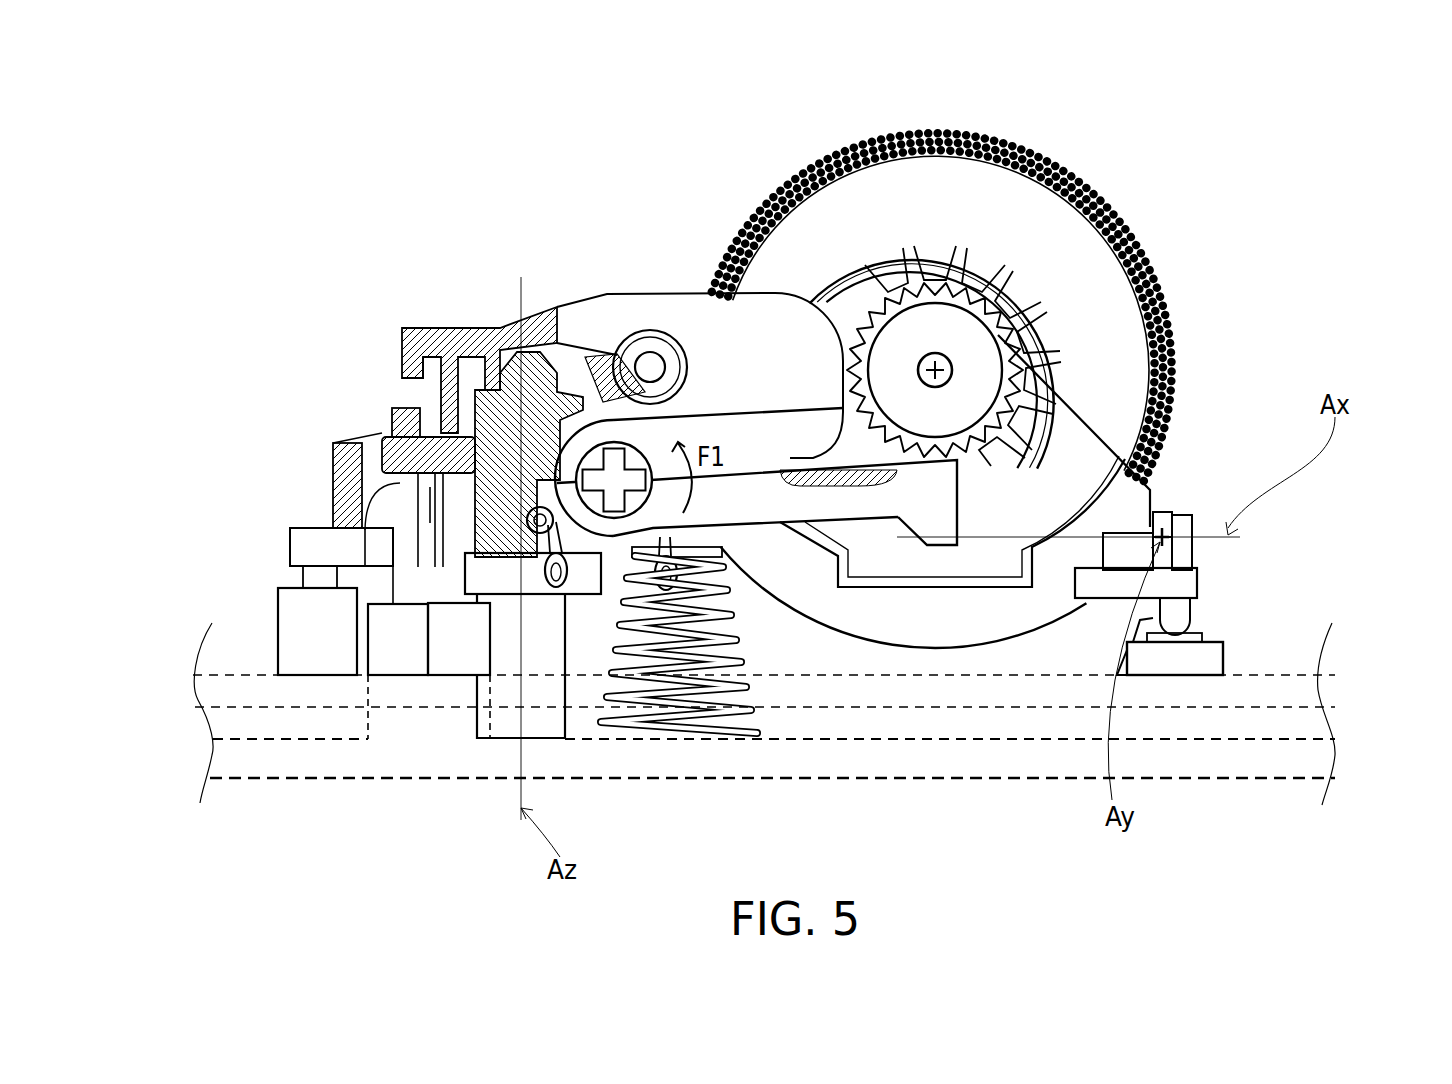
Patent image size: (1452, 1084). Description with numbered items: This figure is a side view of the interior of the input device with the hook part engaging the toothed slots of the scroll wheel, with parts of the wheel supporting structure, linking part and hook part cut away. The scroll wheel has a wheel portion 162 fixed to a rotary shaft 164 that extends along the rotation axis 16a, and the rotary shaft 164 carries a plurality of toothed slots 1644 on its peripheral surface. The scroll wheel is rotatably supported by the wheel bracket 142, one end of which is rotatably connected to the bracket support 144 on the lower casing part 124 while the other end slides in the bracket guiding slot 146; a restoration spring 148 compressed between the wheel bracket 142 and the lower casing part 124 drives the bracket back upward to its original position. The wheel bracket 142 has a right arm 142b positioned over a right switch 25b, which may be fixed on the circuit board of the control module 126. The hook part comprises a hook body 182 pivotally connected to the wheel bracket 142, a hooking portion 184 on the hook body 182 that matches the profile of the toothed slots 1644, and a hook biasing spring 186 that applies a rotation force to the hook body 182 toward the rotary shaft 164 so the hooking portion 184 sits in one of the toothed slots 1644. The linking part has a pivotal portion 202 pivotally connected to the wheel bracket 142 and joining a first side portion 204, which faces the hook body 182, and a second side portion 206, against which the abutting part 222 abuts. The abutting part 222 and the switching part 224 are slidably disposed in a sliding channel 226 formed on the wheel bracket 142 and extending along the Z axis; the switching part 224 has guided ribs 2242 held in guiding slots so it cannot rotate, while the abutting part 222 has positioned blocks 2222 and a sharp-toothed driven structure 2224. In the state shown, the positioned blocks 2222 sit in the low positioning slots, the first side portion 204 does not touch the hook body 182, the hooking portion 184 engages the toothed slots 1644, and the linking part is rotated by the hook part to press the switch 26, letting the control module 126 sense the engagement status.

The wheel portion 162 is at (1045, 208).
The rotary shaft 164 is at (950, 337).
The rotation axis 16a is at (955, 381).
The toothed slots 1644 is at (1018, 321).
The first side portion 204 is at (813, 400).
The pivotal portion 202 is at (658, 338).
The wheel bracket 142 is at (628, 345).
The second side portion 206 is at (473, 363).
The sliding channel 226 is at (457, 323).
The abutting part 222 is at (535, 350).
The positioned blocks 2222 is at (470, 407).
The driven structure 2224 is at (487, 492).
The guided ribs 2242 is at (520, 558).
The switch 26 is at (297, 643).
The bracket guiding slot 146 is at (448, 653).
The switching part 224 is at (508, 730).
The hook body 182 is at (857, 507).
The hooking portion 184 is at (942, 458).
The hook biasing spring 186 is at (563, 582).
The restoration spring 148 is at (737, 733).
The bracket support 144 is at (1162, 510).
The right arm 142b is at (1187, 577).
The right switch 25b is at (1220, 640).
The control module 126 is at (1257, 673).
The lower casing part 124 is at (1202, 780).